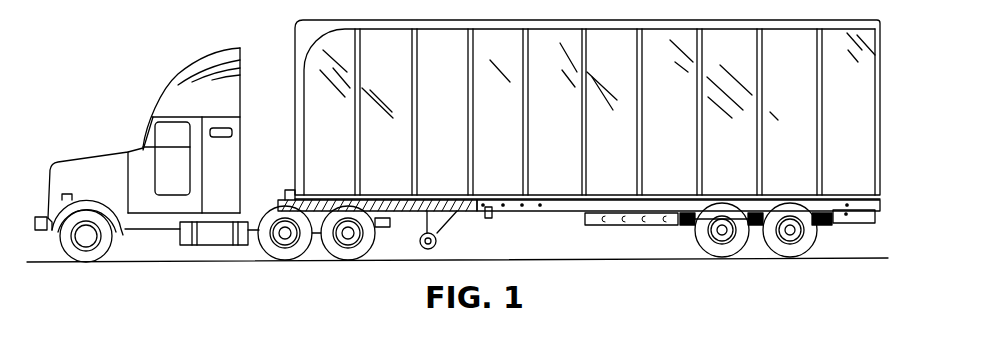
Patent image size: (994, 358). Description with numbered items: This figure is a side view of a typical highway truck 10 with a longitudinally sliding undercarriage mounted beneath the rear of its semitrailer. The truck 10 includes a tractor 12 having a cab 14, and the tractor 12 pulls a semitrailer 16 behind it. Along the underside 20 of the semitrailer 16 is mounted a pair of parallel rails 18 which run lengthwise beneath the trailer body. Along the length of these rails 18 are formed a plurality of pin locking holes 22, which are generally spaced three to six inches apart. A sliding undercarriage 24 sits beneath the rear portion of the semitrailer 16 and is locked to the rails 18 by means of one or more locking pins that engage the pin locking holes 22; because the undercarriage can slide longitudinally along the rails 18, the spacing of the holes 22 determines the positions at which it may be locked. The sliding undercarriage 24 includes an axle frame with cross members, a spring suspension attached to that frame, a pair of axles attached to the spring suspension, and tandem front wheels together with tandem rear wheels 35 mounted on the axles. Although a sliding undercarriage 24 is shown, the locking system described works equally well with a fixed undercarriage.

The truck 10 is at (172, 52).
The tractor 12 is at (110, 172).
The cab 14 is at (167, 138).
The semitrailer 16 is at (298, 43).
The rails 18 is at (558, 212).
The underside 20 is at (407, 211).
The pin locking holes 22 is at (523, 207).
The sliding undercarriage 24 is at (686, 240).
The tandem rear wheels 35 is at (797, 248).